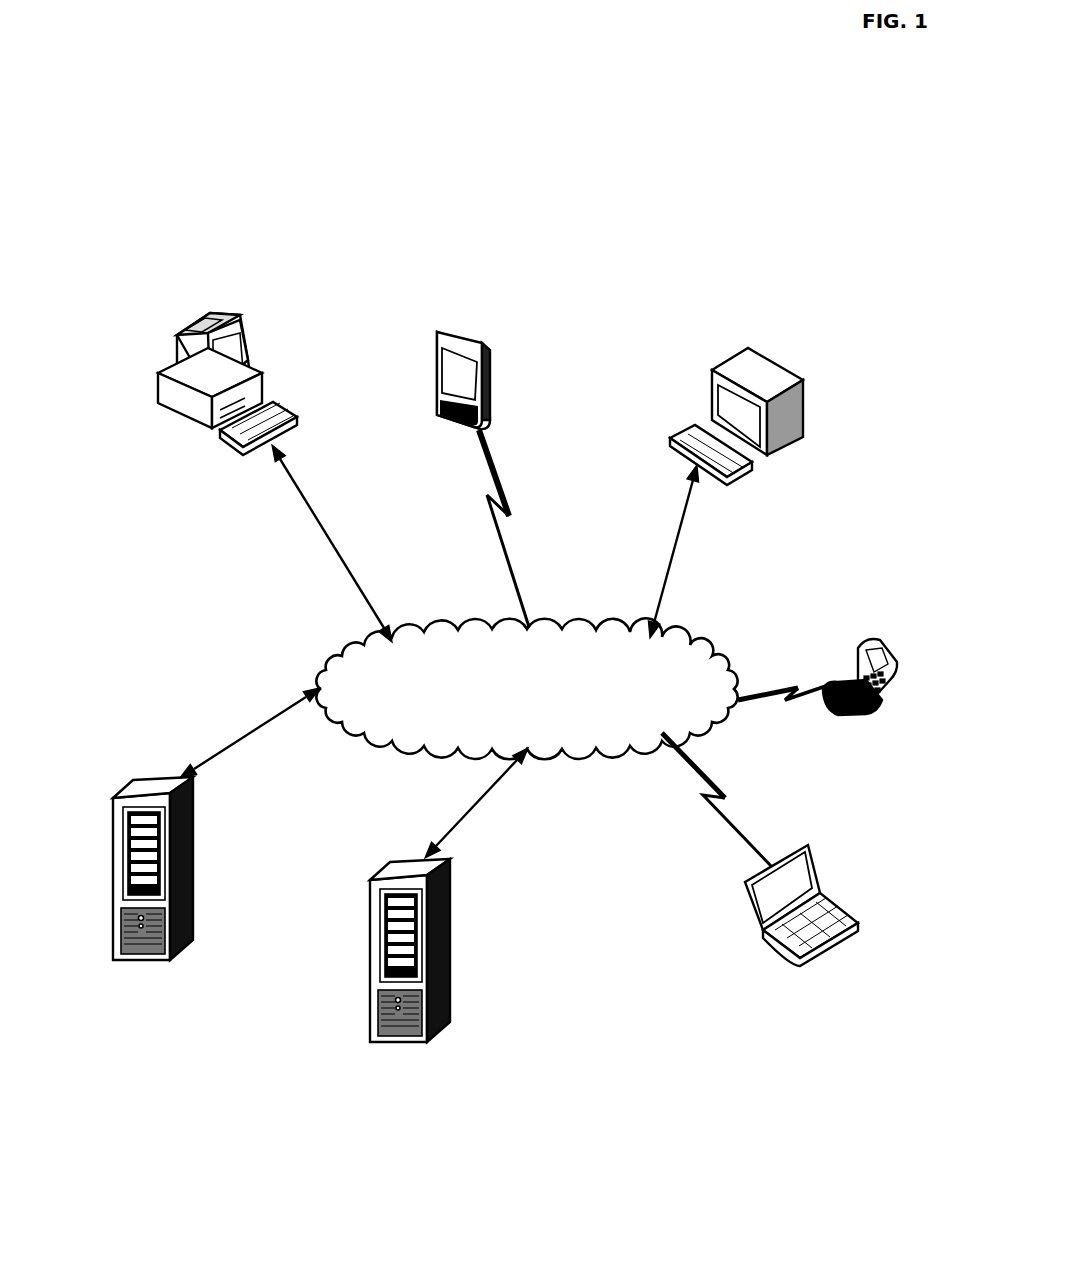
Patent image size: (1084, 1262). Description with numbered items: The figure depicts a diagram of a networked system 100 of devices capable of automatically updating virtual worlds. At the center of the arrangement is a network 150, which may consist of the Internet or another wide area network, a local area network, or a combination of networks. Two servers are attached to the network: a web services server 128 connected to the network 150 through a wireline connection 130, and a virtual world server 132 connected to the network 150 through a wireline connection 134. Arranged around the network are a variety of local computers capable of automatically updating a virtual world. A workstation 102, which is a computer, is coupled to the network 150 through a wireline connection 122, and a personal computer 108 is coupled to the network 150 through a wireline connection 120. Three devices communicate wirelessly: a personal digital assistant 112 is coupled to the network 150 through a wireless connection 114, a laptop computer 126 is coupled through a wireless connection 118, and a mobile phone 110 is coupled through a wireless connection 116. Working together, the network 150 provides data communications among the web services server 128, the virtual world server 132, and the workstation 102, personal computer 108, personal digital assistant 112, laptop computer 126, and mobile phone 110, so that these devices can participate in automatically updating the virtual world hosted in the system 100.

The networked system 100 is at (632, 177).
The workstation 102 is at (775, 365).
The personal computer 108 is at (253, 330).
The mobile phone 110 is at (880, 645).
The personal digital assistant 112 is at (473, 340).
The wireless connection 114 is at (508, 555).
The wireless connection 116 is at (760, 690).
The wireless connection 118 is at (712, 817).
The wireline connection 120 is at (335, 540).
The wireline connection 122 is at (665, 590).
The laptop computer 126 is at (838, 903).
The web services server 128 is at (195, 897).
The wireline connection 130 is at (265, 718).
The virtual world server 132 is at (450, 937).
The wireline connection 134 is at (490, 790).
The network 150 is at (703, 655).